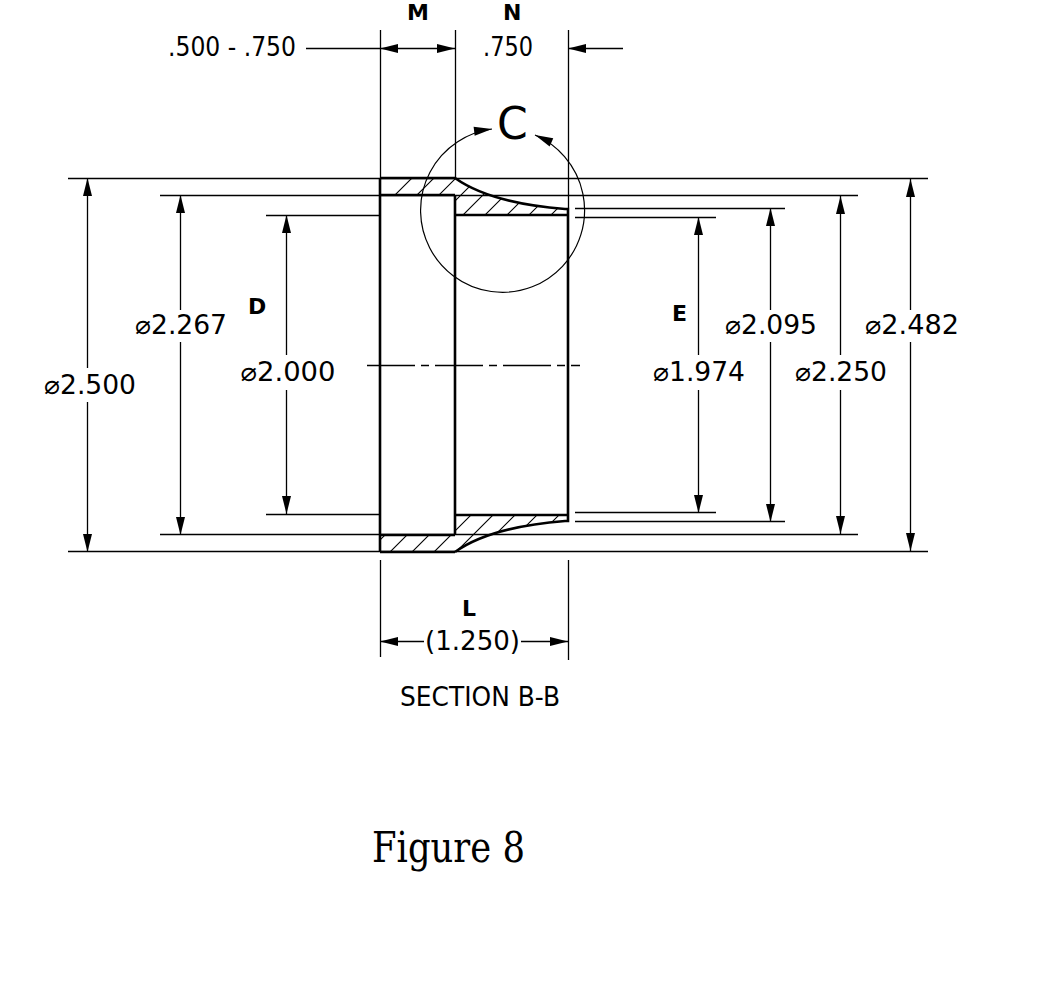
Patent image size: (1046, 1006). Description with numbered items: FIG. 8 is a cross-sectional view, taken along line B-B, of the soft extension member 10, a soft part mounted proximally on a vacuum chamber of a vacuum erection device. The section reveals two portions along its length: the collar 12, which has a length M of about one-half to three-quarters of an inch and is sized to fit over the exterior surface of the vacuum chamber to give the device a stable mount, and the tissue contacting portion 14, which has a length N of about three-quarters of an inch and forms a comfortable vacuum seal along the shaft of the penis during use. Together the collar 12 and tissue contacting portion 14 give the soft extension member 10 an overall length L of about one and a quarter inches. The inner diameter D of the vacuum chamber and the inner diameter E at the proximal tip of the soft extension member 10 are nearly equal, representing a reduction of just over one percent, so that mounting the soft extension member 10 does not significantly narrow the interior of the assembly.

The soft extension member 10 is at (487, 451).
The collar 12 is at (412, 549).
The tissue contacting portion 14 is at (494, 532).